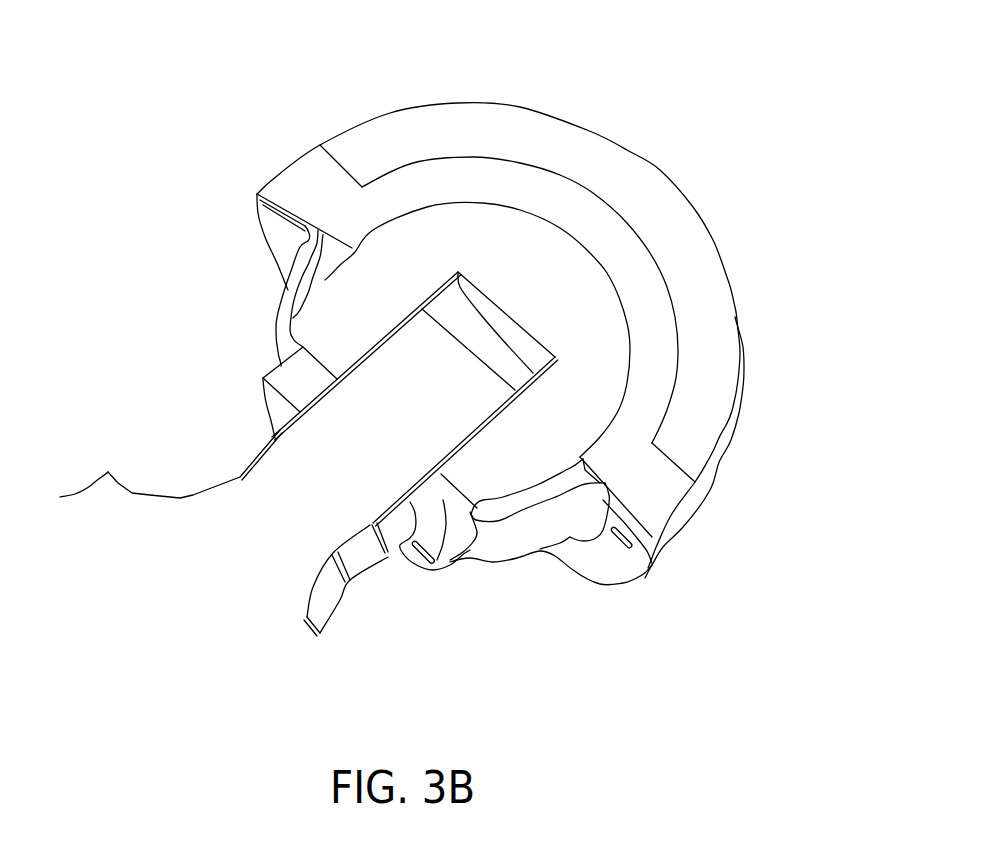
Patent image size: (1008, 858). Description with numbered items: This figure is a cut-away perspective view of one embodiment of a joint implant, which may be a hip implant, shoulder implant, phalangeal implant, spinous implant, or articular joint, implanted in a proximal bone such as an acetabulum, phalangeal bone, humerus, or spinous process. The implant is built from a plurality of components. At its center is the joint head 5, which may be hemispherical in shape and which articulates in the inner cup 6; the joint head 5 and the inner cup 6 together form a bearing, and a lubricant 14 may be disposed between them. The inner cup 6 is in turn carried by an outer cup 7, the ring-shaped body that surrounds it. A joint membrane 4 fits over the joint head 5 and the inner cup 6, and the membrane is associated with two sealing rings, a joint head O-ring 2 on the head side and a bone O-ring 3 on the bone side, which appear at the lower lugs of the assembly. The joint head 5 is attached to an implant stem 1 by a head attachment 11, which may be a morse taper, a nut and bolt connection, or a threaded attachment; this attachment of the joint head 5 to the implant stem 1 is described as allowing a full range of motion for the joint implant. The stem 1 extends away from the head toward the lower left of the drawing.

The implant stem 1 is at (235, 528).
The joint head O-ring 2 is at (443, 545).
The bone O-ring 3 is at (608, 565).
The joint membrane 4 is at (517, 543).
The joint head 5 is at (563, 362).
The inner cup 6 is at (305, 180).
The outer cup 7 is at (403, 140).
The head attachment 11 is at (372, 347).
The lubricant 14 is at (610, 287).